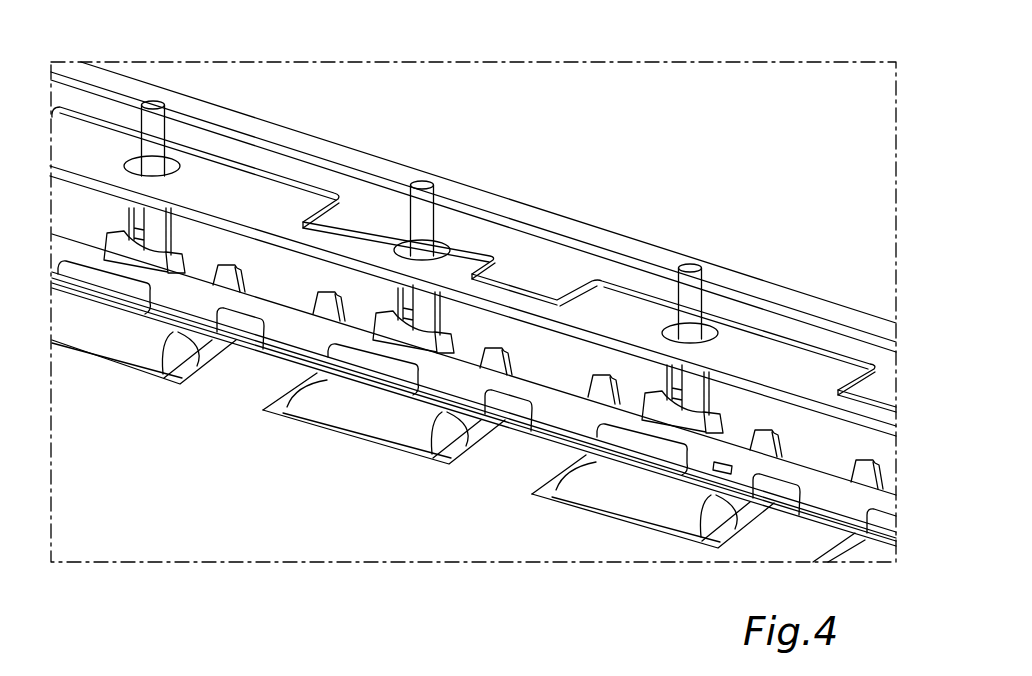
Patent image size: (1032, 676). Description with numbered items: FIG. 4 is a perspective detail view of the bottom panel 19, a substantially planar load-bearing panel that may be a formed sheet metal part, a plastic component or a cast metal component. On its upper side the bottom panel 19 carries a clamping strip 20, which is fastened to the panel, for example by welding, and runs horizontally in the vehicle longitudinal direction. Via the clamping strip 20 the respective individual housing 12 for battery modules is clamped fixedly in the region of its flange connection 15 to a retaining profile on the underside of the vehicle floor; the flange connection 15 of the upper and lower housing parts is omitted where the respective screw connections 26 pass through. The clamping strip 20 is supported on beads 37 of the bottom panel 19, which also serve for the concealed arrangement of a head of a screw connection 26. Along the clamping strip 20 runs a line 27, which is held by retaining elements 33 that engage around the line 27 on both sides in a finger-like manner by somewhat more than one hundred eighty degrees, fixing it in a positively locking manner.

The individual housing 12 is at (750, 181).
The flange connection 15 is at (550, 272).
The bottom panel 19 is at (392, 537).
The clamping strip 20 is at (557, 476).
The screw connection 26 is at (155, 127).
The line 27 is at (723, 467).
The retaining element 33 is at (112, 282).
The bead 37 is at (150, 355).